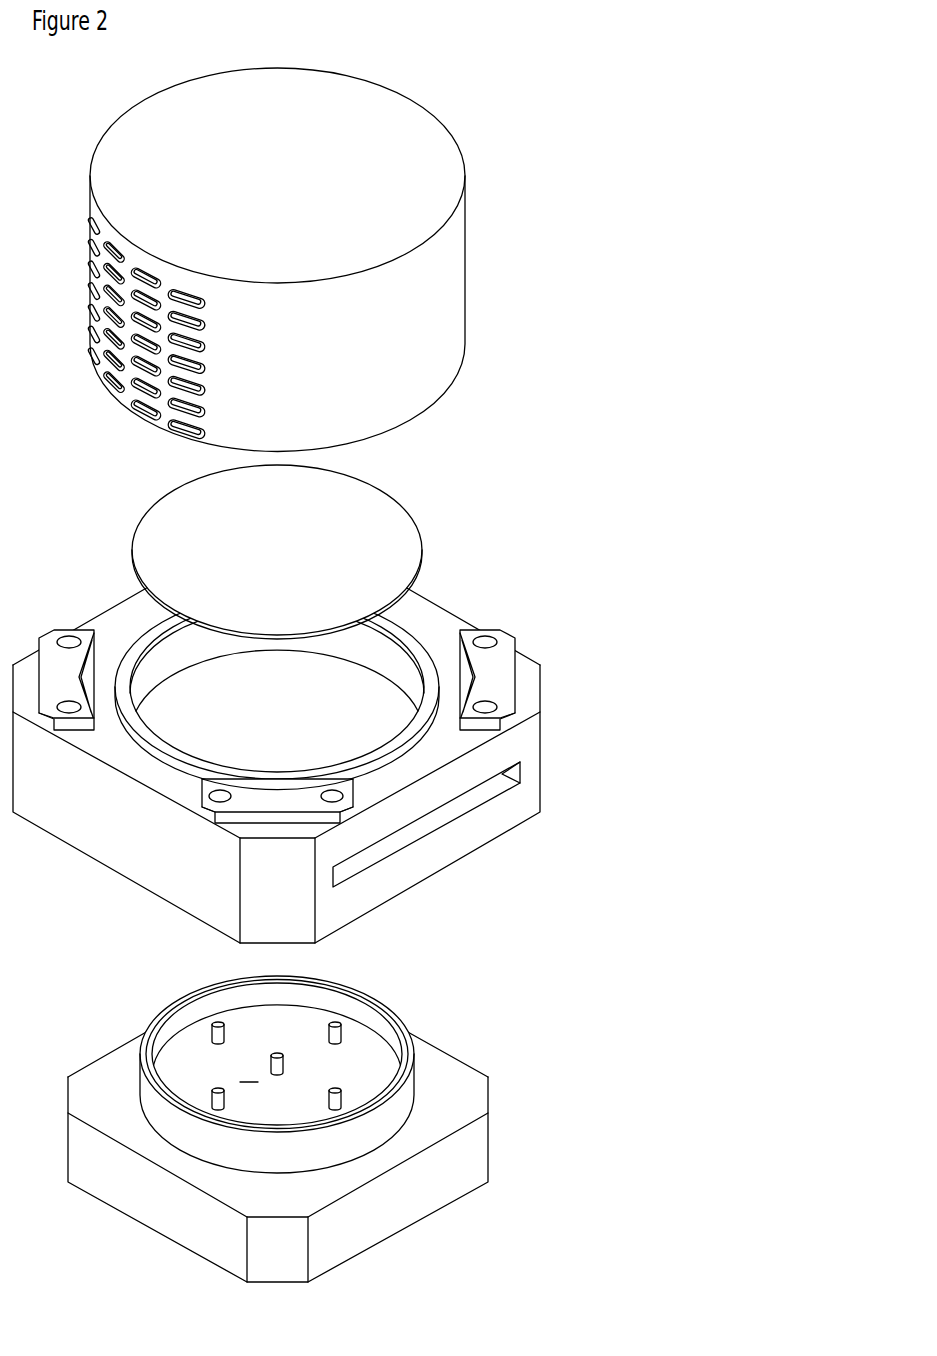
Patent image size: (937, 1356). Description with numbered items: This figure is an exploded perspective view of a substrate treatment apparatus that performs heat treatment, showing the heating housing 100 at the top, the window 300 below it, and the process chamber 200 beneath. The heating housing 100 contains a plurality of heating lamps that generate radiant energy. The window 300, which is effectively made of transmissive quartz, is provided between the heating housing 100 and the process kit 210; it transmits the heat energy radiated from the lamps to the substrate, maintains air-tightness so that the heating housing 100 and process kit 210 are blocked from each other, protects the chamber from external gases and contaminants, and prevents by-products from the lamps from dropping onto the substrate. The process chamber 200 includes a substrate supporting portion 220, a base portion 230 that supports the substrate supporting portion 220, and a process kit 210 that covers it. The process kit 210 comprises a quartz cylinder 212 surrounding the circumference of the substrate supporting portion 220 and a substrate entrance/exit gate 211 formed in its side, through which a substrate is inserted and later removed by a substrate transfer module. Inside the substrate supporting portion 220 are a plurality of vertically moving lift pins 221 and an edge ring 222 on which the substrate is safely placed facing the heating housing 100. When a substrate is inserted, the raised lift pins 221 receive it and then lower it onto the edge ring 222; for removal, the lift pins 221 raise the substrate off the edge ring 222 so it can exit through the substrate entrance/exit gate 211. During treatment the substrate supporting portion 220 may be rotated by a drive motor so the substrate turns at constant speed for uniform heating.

The heating housing 100 is at (465, 276).
The process chamber 200 is at (333, 873).
The process kit 210 is at (316, 764).
The substrate entrance/exit gate 211 is at (393, 843).
The quartz cylinder 212 is at (543, 740).
The substrate supporting portion 220 is at (353, 1069).
The lift pins 221 is at (338, 1087).
The edge ring 222 is at (383, 1003).
The base portion 230 is at (475, 1162).
The window 300 is at (428, 550).